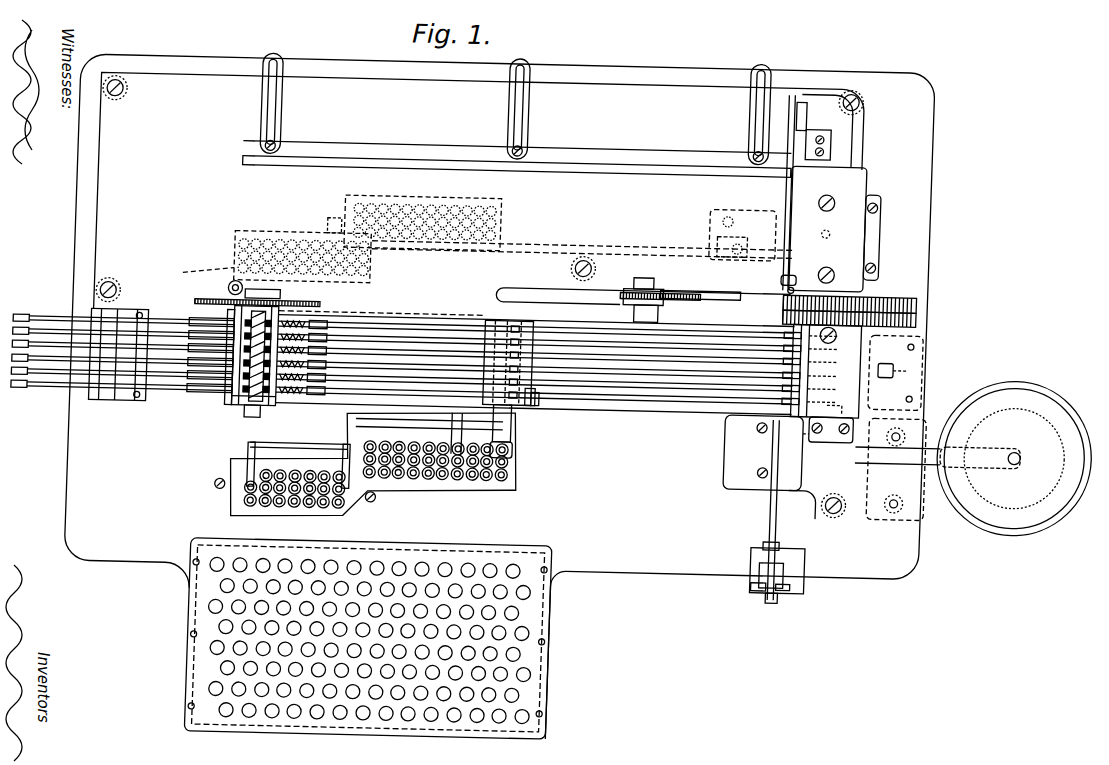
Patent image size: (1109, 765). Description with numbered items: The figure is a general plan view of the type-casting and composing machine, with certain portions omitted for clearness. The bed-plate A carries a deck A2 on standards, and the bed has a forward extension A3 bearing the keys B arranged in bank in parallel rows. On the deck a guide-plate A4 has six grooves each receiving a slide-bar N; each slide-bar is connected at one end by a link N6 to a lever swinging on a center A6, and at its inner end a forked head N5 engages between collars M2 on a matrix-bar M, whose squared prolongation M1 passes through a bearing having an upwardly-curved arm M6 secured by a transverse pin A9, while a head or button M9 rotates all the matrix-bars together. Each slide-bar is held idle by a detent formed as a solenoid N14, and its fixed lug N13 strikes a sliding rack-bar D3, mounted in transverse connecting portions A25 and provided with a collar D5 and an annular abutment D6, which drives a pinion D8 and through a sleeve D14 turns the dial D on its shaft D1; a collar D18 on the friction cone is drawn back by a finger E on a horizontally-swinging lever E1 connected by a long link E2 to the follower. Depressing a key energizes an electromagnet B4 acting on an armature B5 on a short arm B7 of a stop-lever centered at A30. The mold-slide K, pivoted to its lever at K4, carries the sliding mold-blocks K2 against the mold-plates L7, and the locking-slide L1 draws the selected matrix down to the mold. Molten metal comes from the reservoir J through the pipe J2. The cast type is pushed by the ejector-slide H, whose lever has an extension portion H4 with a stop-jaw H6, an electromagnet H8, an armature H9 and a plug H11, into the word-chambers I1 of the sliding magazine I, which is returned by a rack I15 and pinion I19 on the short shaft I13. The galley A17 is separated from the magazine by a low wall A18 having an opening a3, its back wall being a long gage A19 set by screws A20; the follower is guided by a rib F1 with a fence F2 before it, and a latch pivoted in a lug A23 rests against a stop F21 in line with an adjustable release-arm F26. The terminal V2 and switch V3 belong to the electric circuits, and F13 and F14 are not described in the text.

The bed-plate A is at (83, 231).
The plate or deck A2 is at (479, 199).
The forward extension A3 is at (572, 630).
The guide-plate A4 is at (408, 318).
The center A6 is at (130, 397).
The transverse pin A9 is at (525, 410).
The galley A17 is at (516, 182).
The low wall A18 is at (705, 278).
The long gage A19 is at (550, 160).
The screws A20 is at (282, 139).
The lug A23 is at (836, 126).
The transverse connecting portions A25 is at (272, 399).
The center A30 is at (263, 441).
The keys B is at (368, 638).
The electromagnets B4 is at (262, 496).
The armatures B5 is at (267, 500).
The short arms B7 is at (262, 462).
The dial D is at (322, 303).
The shaft D1 is at (290, 288).
The sliding rack-bar D3 is at (252, 400).
The collar D5 is at (225, 313).
The annular abutment D6 is at (333, 298).
The pinion D8 is at (259, 408).
The sleeve D14 is at (253, 284).
The collar or flange D18 is at (274, 292).
The finger E is at (250, 290).
The horizontally-swinging lever E1 is at (205, 271).
The long link E2 is at (548, 238).
The rib F1 is at (872, 166).
The fence F2 is at (790, 184).
The carriage screw F13 is at (833, 176).
The hinge F14 is at (899, 221).
The stop F21 is at (832, 141).
The adjustable release-arm F26 is at (790, 262).
The ejector-slide H is at (787, 483).
The extension portion H4 is at (805, 550).
The stop-jaw H6 is at (812, 567).
The electromagnet H8 is at (769, 550).
The armature H9 is at (778, 573).
The plug H11 is at (790, 585).
The sliding magazine I is at (928, 286).
The word-chambers I1 is at (928, 301).
The short shaft I13 is at (640, 280).
The rack I15 is at (712, 279).
The pinion I19 is at (652, 264).
The reservoir J is at (1015, 454).
The pipe J2 is at (908, 432).
The mold-slide K is at (883, 373).
The sliding mold-block K2 is at (855, 335).
The pivot connection K4 is at (905, 348).
The locking-slide L1 is at (765, 402).
The mold-plates L7 is at (822, 398).
The matrix-bar M is at (660, 392).
The squared prolongation M1 is at (447, 312).
The collars M2 is at (546, 390).
The upwardly-curved arm M6 is at (512, 316).
The head or button M9 is at (528, 438).
The slide-bar N is at (200, 316).
The forked head N5 is at (552, 392).
The link N6 is at (75, 386).
The fixed lug N13 is at (330, 390).
The solenoids N14 is at (238, 395).
The terminal V2 is at (501, 711).
The switch V3 is at (523, 711).
The opening a3 is at (799, 289).